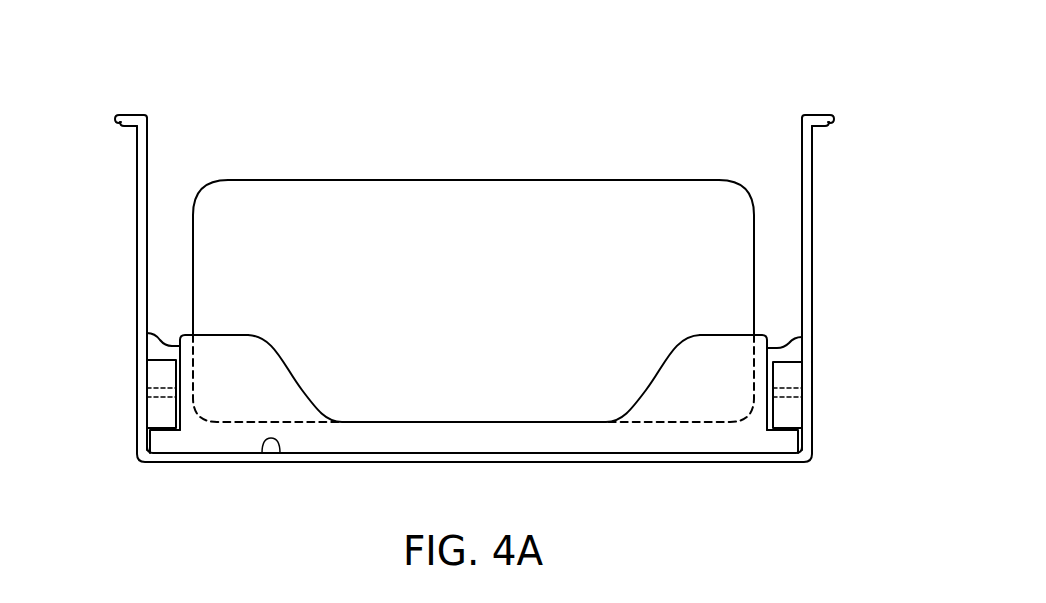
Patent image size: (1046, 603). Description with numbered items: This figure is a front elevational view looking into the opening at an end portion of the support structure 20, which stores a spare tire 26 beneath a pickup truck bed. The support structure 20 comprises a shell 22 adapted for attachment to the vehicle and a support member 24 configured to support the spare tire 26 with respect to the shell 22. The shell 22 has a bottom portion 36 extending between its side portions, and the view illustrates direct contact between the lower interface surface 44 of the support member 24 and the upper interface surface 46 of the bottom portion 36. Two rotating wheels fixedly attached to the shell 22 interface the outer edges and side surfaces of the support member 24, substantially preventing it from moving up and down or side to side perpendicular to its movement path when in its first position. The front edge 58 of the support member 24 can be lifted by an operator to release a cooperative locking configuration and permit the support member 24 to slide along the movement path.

The support structure 20 is at (744, 49).
The shell 22 is at (451, 315).
The support member 24 is at (472, 429).
The spare tire 26 is at (553, 184).
The bottom portion 36 is at (345, 457).
The lower interface surface 44 is at (262, 453).
The upper interface surface 46 is at (467, 455).
The front edge 58 is at (647, 417).